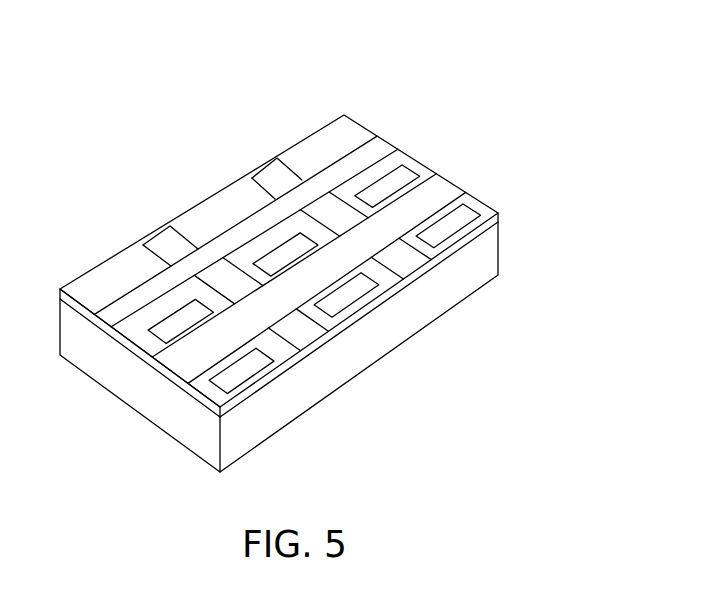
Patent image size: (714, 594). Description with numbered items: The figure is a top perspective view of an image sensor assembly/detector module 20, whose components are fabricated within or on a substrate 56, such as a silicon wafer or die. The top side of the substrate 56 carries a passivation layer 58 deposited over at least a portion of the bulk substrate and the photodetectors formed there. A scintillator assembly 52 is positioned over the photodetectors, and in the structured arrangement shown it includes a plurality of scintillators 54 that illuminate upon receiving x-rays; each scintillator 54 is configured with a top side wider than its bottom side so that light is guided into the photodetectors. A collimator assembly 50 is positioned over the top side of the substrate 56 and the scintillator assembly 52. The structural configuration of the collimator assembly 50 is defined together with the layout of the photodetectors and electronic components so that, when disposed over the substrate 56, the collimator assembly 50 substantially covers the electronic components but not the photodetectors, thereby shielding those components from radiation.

The image sensor assembly/detector module 20 is at (140, 85).
The collimator assembly 50 is at (167, 244).
The scintillator assembly 52 is at (472, 207).
The scintillator 54 is at (273, 257).
The substrate 56 is at (499, 272).
The passivation layer 58 is at (500, 219).